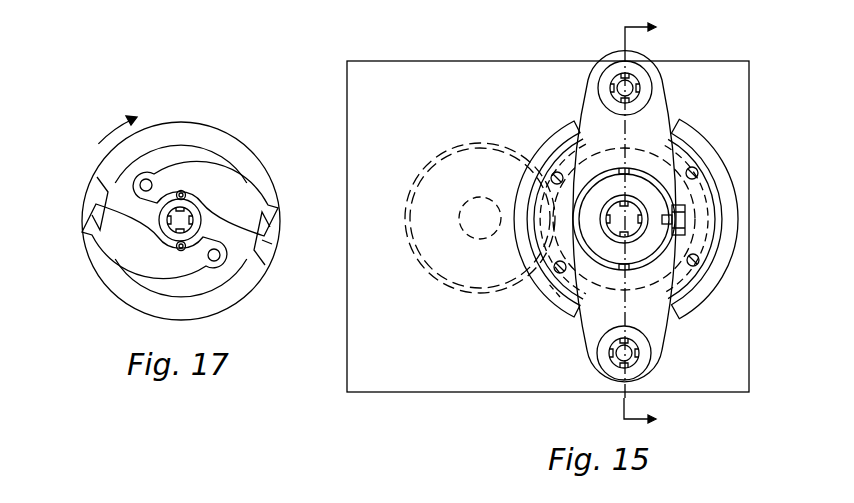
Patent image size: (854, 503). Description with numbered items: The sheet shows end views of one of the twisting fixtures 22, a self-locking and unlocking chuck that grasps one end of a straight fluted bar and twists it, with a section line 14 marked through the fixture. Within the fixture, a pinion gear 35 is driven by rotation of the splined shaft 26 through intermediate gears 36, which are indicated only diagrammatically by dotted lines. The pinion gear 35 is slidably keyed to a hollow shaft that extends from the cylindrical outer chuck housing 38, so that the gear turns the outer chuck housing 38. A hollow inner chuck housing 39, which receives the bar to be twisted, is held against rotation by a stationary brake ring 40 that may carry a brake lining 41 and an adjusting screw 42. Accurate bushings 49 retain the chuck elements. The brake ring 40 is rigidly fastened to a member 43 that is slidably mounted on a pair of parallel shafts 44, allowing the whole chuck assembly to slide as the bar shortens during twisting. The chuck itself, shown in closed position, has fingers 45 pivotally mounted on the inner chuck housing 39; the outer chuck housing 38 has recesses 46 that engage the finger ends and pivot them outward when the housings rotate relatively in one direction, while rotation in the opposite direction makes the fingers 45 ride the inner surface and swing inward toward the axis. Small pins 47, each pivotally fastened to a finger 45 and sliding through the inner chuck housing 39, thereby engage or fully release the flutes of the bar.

In FIG. 15, the section line 14- 14 is at (653, 225).
In FIG. 15, the twisting fixture 22 is at (450, 393).
In FIG. 15, the splined shaft 26 is at (463, 242).
In FIG. 15, the pinion gear 35 is at (556, 294).
In FIG. 15, the intermediate gears 36 is at (414, 253).
In FIG. 17, the outer chuck housing 38 is at (198, 128).
In FIG. 17, the inner chuck housing 39 is at (166, 214).
In FIG. 15, the inner chuck housing 39 is at (608, 204).
In FIG. 15, the brake ring 40 is at (655, 252).
In FIG. 17, the brake lining 41 is at (272, 244).
In FIG. 15, the adjusting screw 42 is at (686, 220).
In FIG. 15, the member 43 is at (661, 108).
In FIG. 15, the parallel shafts 44 is at (612, 88).
In FIG. 17, the fingers 45 is at (190, 183).
In FIG. 17, the recesses 46 is at (274, 206).
In FIG. 17, the pins 47 is at (183, 230).
In FIG. 15, the pins 47 is at (634, 210).
In FIG. 15, the bushings 49 is at (690, 170).